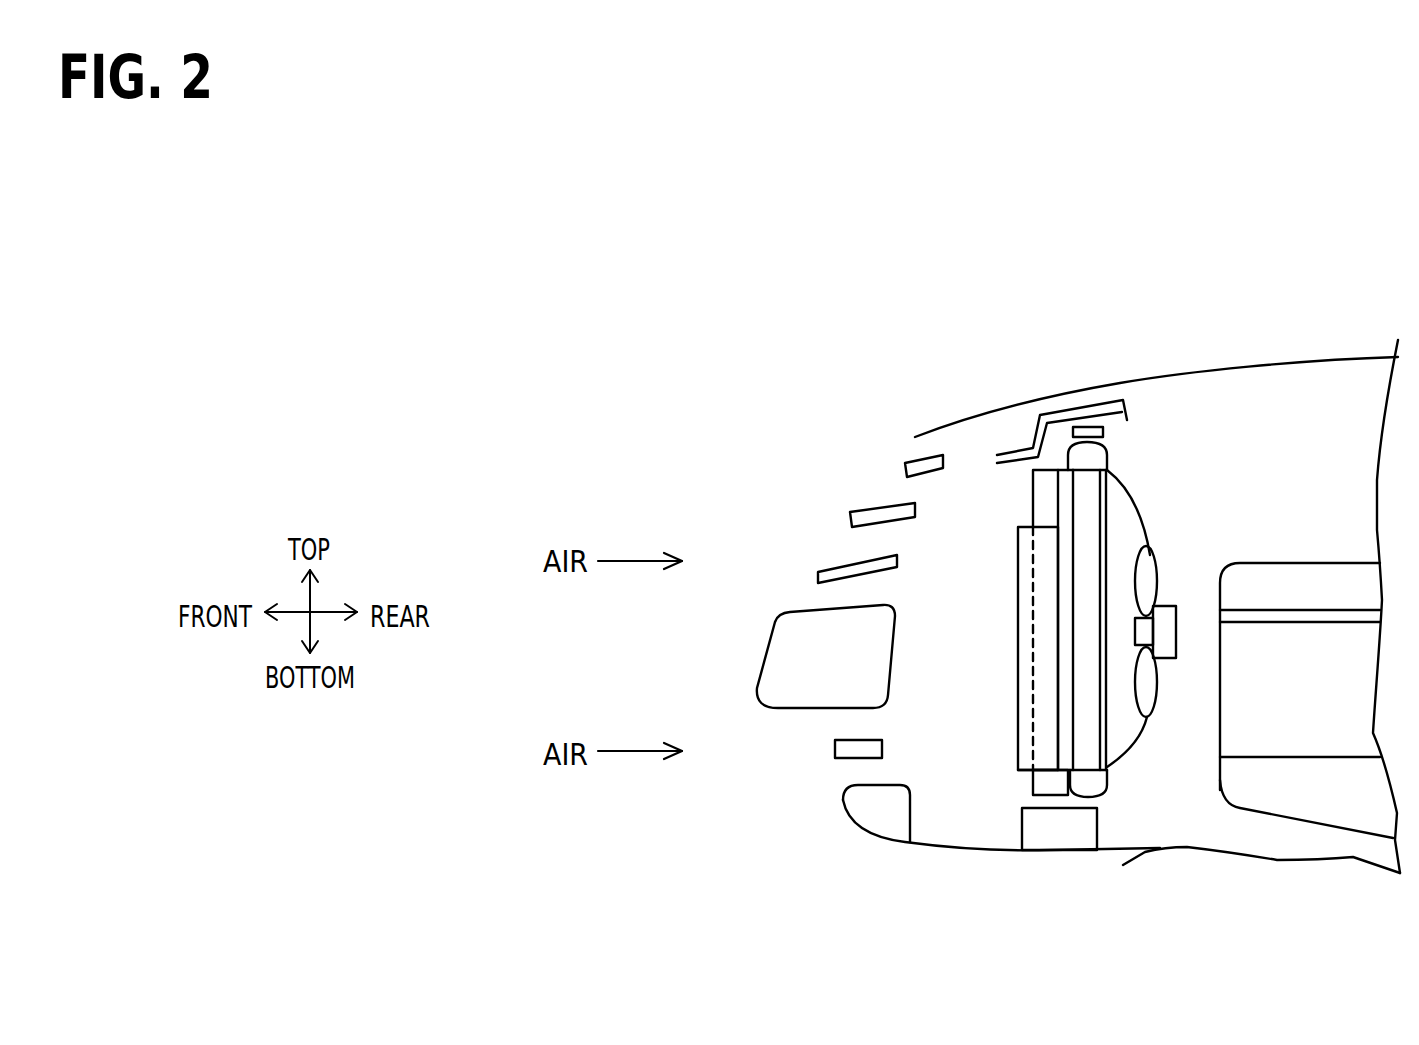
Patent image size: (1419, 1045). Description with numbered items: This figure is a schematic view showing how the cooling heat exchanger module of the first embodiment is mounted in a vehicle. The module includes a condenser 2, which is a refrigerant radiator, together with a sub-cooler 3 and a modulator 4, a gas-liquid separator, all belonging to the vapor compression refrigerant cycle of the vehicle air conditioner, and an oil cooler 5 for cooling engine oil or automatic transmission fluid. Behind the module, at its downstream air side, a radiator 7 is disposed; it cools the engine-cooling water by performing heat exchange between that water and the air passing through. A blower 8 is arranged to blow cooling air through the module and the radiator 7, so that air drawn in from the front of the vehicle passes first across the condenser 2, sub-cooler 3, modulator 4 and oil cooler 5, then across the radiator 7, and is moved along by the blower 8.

The condenser 2 is at (1053, 555).
The sub-cooler 3 is at (1042, 779).
The modulator 4 is at (1048, 727).
The oil cooler 5 is at (1045, 502).
The radiator 7 is at (1085, 487).
The blower 8 is at (1150, 560).